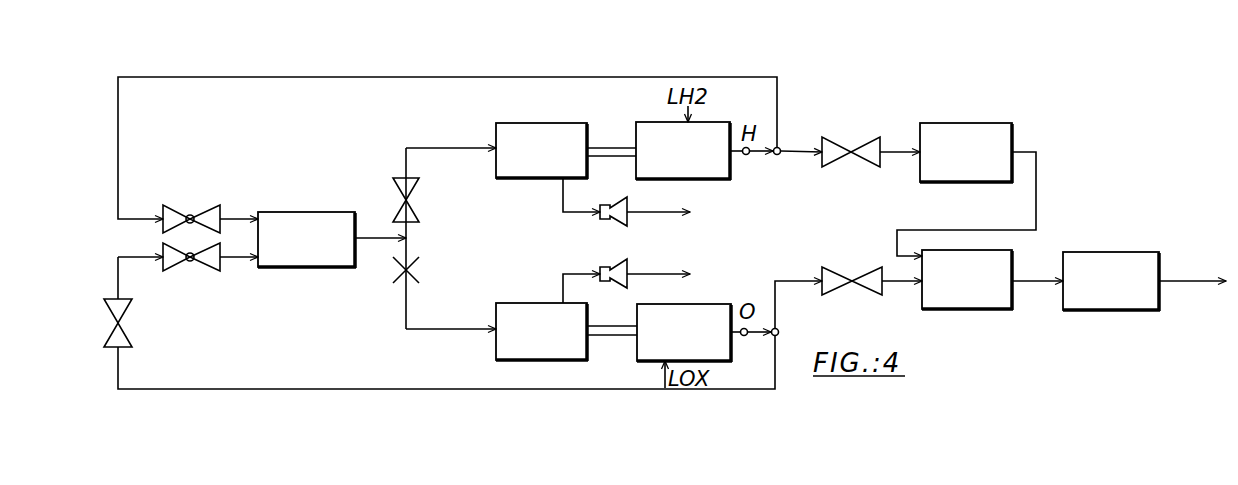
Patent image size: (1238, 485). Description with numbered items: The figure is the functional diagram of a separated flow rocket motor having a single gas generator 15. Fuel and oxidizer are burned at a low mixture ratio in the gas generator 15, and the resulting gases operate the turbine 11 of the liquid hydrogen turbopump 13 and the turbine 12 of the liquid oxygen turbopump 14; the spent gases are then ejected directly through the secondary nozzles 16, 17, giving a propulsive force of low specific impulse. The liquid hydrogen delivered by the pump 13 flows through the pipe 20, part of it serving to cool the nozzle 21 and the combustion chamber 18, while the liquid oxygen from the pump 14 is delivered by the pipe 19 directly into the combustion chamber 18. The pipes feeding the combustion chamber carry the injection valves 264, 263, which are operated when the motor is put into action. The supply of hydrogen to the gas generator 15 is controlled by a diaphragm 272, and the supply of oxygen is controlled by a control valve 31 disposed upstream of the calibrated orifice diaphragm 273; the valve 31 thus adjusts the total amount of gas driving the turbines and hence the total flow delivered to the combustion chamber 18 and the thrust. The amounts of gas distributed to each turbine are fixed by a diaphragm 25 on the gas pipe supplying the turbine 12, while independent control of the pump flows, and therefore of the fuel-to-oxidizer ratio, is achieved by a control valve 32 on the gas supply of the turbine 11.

The turbine 11 is at (552, 161).
The turbine 12 is at (552, 343).
The turbopump 13 is at (696, 161).
The turbopump 14 is at (697, 343).
The gas generator 15 is at (319, 249).
The secondary nozzle 16 is at (626, 209).
The secondary nozzle 17 is at (626, 277).
The combustion chamber 18 is at (978, 291).
The pipe 19 is at (583, 390).
The pipe 20 is at (569, 76).
The nozzle 21 is at (978, 163).
The diaphragm 25 is at (422, 270).
The control valve 31 is at (101, 331).
The control valve 32 is at (391, 211).
The injection valve 263 is at (872, 302).
The injection valve 264 is at (871, 141).
The diaphragm 272 is at (210, 208).
The calibrated orifice diaphragm 273 is at (188, 271).